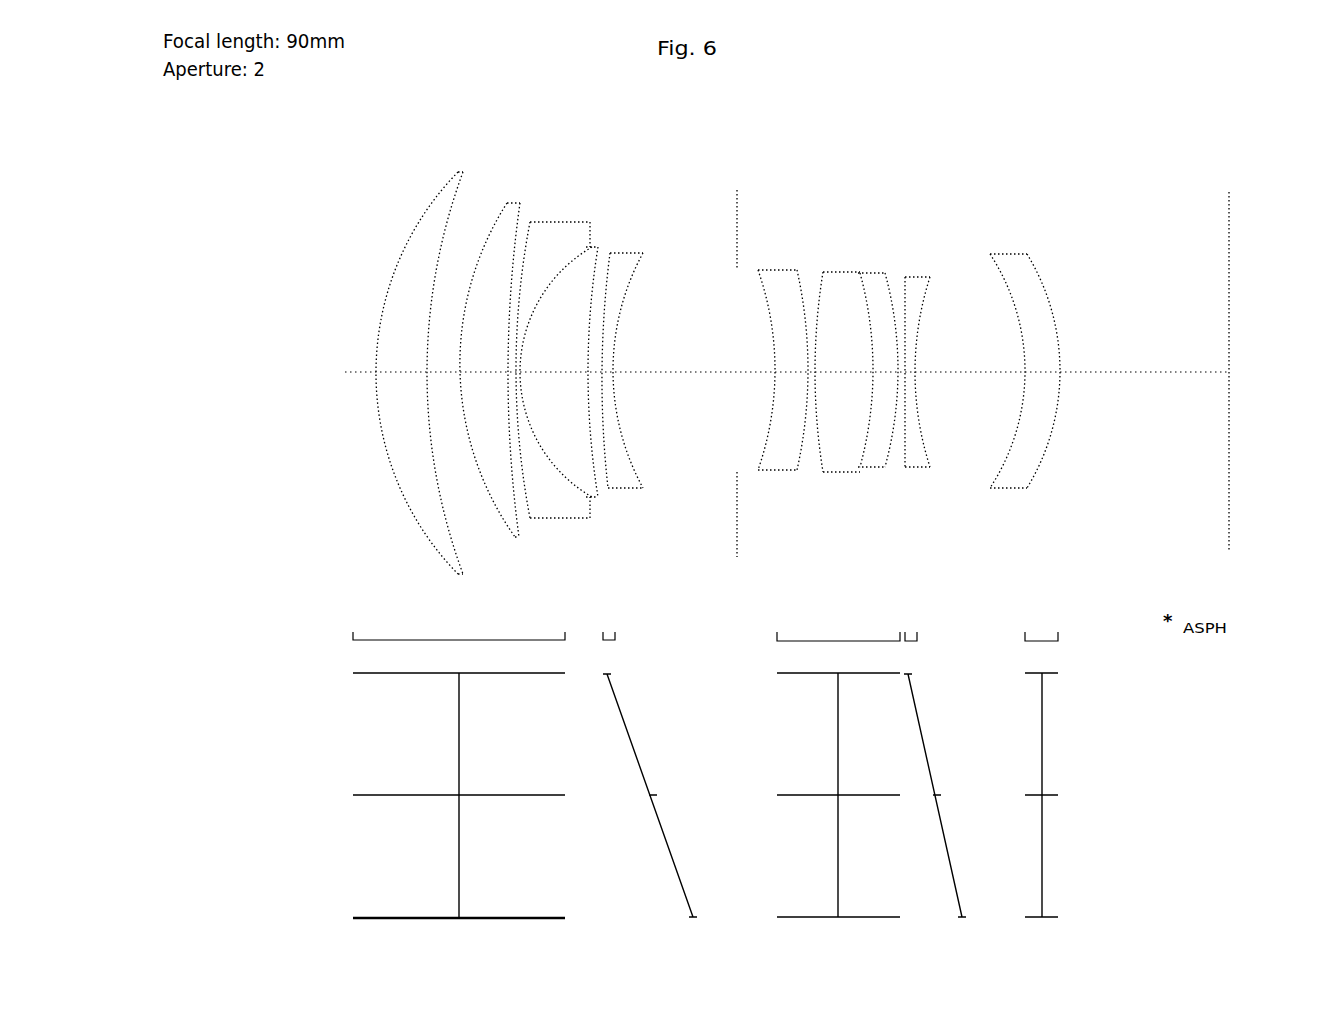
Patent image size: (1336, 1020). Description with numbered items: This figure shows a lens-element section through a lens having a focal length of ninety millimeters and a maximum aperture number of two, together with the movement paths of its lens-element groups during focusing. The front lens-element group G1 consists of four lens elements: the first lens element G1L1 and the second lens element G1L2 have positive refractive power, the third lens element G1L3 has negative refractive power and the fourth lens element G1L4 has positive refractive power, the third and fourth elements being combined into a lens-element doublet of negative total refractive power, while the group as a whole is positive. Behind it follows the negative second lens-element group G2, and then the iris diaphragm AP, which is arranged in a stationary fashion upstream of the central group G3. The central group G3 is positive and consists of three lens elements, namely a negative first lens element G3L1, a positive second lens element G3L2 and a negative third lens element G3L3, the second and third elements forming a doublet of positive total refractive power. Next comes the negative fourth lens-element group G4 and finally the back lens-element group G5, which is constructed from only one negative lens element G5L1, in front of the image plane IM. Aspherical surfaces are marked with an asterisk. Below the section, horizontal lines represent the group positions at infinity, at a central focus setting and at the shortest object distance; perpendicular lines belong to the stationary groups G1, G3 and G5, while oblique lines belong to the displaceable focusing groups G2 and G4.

The front lens-element group G1 is at (459, 766).
The first lens element of the front lens-element group G1L1 is at (424, 383).
The second lens element of the front lens-element group G1L2 is at (492, 382).
The third lens element of the front lens-element group G1L3 is at (566, 199).
The fourth lens element of the front lens-element group G1L4 is at (583, 372).
The second lens-element group G2 is at (639, 585).
The iris diaphragm AP is at (735, 385).
The central lens-element group G3 is at (838, 765).
The first lens element of the central group G3L1 is at (780, 383).
The second lens element of the central group G3L2 is at (856, 250).
The third lens element of the central group G3L3 is at (878, 370).
The fourth lens-element group G4 is at (927, 597).
The back lens-element group G5 is at (1042, 764).
The lens element of the back lens-element group G5L1 is at (1022, 384).
The image plane IM is at (1230, 390).